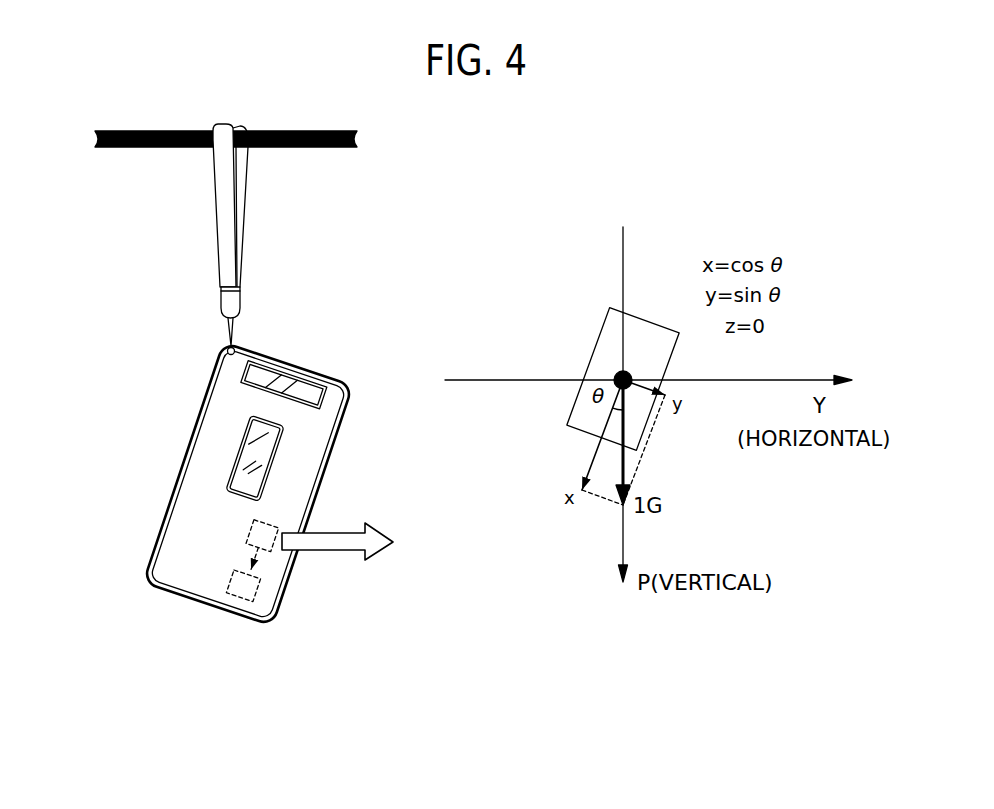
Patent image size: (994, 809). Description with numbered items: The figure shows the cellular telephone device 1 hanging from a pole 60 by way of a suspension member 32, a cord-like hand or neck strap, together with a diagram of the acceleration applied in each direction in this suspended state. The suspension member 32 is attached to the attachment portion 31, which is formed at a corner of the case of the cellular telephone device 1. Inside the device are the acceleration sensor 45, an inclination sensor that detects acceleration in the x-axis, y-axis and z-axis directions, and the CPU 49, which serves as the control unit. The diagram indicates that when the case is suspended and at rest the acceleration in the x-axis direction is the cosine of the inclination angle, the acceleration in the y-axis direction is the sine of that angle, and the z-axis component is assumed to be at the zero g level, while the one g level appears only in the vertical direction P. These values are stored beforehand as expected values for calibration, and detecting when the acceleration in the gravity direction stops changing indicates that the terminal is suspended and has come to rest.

The cellular telephone device 1 is at (268, 487).
The attachment portion 31 is at (227, 353).
The suspension member 32 is at (243, 208).
The acceleration sensor 45 is at (259, 547).
The CPU 49 is at (243, 586).
The pole 60 is at (318, 130).